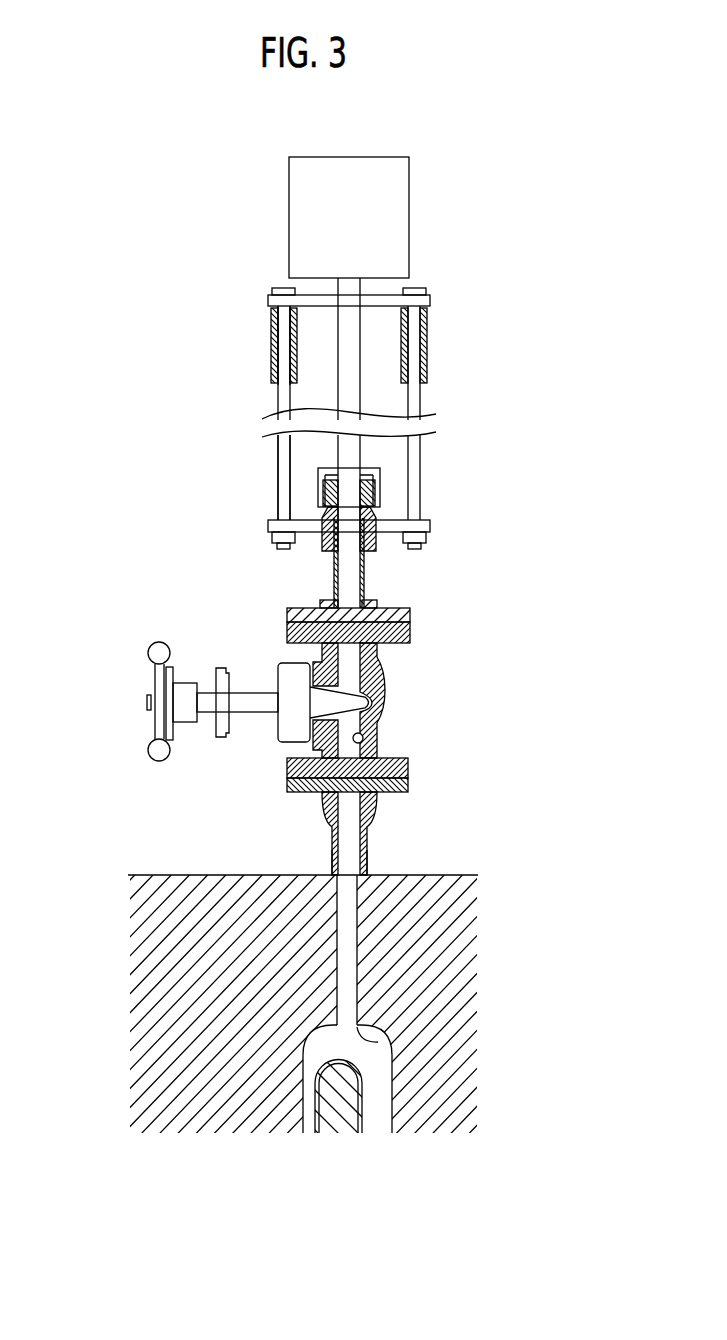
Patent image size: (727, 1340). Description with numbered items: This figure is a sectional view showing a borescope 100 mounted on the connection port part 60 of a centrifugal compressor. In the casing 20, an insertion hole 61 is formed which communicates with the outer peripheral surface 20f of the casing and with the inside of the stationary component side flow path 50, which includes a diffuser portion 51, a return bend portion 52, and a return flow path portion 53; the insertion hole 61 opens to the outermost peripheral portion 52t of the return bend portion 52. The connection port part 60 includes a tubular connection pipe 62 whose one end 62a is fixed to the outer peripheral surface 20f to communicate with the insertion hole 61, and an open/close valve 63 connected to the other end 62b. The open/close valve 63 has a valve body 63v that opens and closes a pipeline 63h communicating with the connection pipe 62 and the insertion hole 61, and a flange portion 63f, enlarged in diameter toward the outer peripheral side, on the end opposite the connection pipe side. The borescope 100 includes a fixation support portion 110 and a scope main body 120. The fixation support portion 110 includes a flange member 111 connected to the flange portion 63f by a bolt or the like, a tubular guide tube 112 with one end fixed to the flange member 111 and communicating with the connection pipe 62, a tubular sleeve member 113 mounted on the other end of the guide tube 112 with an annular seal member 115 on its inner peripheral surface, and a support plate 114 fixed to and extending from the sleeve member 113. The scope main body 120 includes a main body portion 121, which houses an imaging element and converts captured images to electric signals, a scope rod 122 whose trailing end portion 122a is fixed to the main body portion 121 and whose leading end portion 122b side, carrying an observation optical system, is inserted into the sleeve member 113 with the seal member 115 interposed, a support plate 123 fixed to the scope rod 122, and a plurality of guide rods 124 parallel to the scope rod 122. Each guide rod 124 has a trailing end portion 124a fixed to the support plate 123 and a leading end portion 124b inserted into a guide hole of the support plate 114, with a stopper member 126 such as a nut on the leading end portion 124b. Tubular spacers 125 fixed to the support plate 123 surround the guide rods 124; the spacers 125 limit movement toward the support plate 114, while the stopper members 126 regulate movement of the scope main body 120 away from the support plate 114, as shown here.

The borescope 100 is at (244, 160).
The scope main body 120 is at (268, 244).
The main body portion 121 is at (409, 230).
The scope rod 122 is at (362, 402).
The trailing end portion of scope rod 122a is at (404, 283).
The leading end portion of scope rod 122b is at (330, 604).
The support plate 123 is at (430, 300).
The guide rod 124 is at (278, 446).
The trailing end portion of guide rod 124a is at (272, 320).
The leading end portion of guide rod 124b is at (269, 526).
The spacer 125 is at (271, 348).
The stopper member 126 is at (268, 520).
The fixation support portion 110 is at (213, 590).
The flange member 111 is at (410, 614).
The guide tube 112 is at (365, 585).
The sleeve member 113 is at (380, 500).
The support plate 114 is at (430, 527).
The seal member 115 is at (381, 490).
The connection port part 60 is at (282, 656).
The open/close valve 63 is at (385, 720).
The flange portion 63f is at (410, 632).
The valve body 63v is at (386, 686).
The pipeline 63h is at (380, 740).
The connection pipe 62 is at (417, 813).
The one end of connection pipe 62a is at (368, 868).
The other end of connection pipe 62b is at (410, 790).
The casing 20 is at (172, 875).
The outer peripheral surface of casing 20f is at (243, 875).
The insertion hole 61 is at (350, 943).
The stationary component side flow path 50 is at (381, 1078).
The diffuser portion 51 is at (305, 1105).
The return bend portion 52 is at (335, 1043).
The outermost peripheral portion of return bend portion 52t is at (384, 1035).
The return flow path portion 53 is at (380, 1115).